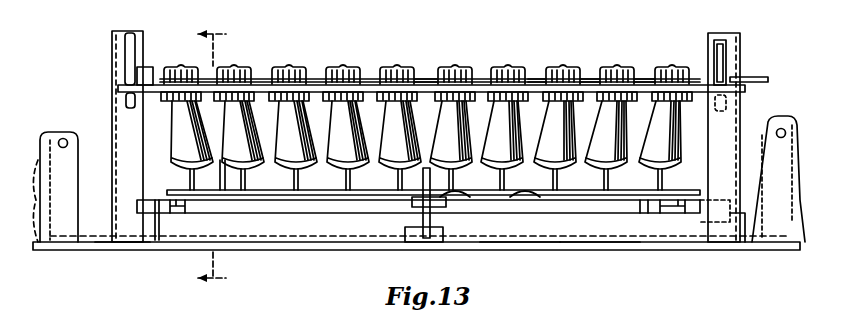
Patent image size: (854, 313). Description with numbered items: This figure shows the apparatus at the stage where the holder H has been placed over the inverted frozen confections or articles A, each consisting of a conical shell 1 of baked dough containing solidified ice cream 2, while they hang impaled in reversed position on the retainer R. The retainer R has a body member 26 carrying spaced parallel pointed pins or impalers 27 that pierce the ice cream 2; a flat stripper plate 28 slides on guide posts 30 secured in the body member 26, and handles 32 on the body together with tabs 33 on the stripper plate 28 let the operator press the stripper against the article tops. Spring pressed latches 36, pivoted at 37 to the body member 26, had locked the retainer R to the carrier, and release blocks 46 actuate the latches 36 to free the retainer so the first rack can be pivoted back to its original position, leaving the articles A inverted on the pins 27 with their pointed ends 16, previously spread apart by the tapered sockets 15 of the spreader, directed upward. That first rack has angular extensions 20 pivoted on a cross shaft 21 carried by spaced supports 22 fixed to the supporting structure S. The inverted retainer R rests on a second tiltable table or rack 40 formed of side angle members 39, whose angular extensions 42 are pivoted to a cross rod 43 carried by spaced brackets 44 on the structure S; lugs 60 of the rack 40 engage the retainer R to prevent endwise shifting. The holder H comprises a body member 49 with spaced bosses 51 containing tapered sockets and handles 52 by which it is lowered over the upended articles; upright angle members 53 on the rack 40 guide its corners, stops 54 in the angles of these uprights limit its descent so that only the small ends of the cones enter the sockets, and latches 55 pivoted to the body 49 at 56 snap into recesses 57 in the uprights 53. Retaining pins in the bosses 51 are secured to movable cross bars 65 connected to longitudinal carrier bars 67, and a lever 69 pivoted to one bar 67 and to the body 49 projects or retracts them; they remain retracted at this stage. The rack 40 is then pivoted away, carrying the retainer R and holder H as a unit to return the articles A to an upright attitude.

The conical shell 1 is at (676, 128).
The ice cream 2 is at (680, 165).
The tapered socket 15 is at (229, 153).
The pointed end 16 is at (452, 75).
The angularly disposed extension 20 is at (36, 230).
The cross member or shaft 21 is at (63, 138).
The spaced support 22 is at (44, 152).
The body member 26 is at (342, 206).
The pointed pin or impaler 27 is at (458, 192).
The stripper plate 28 is at (528, 192).
The guide post 30 is at (232, 192).
The handle 32 is at (150, 215).
The tab or extension 33 is at (178, 191).
The spring pressed latch 36 is at (446, 170).
The pivot 37 is at (412, 206).
The side angle member 39 is at (533, 240).
The second tiltable table or rack 40 is at (598, 243).
The angular extension 42 is at (755, 235).
The cross bar or rod 43 is at (781, 128).
The spaced bracket 44 is at (772, 243).
The release member or block 46 is at (443, 236).
The body member 49 is at (432, 78).
The boss 51 is at (606, 80).
The handle 52 is at (133, 35).
The angle member 53 is at (112, 40).
The stop 54 is at (126, 101).
The latch 55 is at (714, 58).
The pivot 56 is at (153, 72).
The recess 57 is at (722, 55).
The lug 60 is at (176, 213).
The movable cross bar 65 is at (316, 80).
The longitudinal carrier bar 67 is at (531, 80).
The lever 69 is at (765, 80).
The frozen confection or article A is at (385, 135).
The holder H is at (585, 80).
The retainer R is at (648, 213).
The table or supporting structure S is at (100, 243).